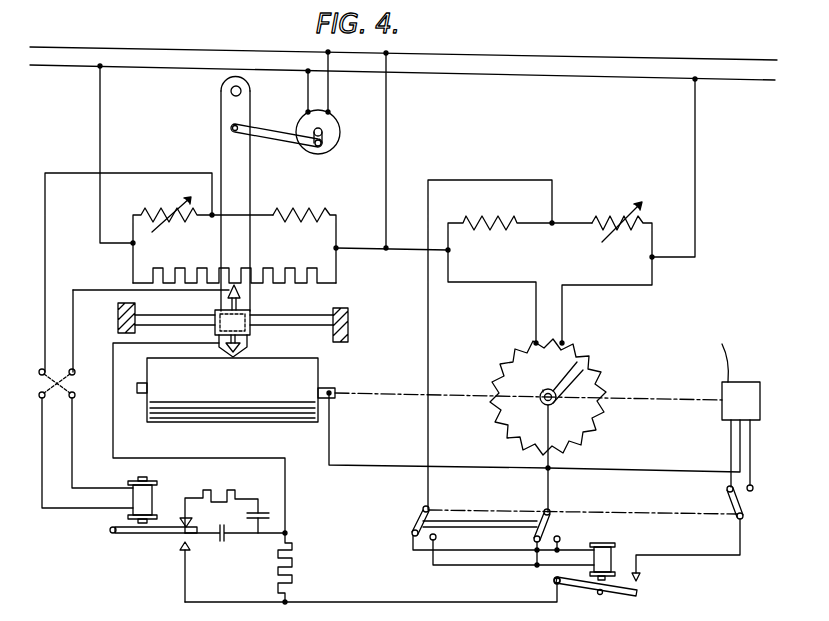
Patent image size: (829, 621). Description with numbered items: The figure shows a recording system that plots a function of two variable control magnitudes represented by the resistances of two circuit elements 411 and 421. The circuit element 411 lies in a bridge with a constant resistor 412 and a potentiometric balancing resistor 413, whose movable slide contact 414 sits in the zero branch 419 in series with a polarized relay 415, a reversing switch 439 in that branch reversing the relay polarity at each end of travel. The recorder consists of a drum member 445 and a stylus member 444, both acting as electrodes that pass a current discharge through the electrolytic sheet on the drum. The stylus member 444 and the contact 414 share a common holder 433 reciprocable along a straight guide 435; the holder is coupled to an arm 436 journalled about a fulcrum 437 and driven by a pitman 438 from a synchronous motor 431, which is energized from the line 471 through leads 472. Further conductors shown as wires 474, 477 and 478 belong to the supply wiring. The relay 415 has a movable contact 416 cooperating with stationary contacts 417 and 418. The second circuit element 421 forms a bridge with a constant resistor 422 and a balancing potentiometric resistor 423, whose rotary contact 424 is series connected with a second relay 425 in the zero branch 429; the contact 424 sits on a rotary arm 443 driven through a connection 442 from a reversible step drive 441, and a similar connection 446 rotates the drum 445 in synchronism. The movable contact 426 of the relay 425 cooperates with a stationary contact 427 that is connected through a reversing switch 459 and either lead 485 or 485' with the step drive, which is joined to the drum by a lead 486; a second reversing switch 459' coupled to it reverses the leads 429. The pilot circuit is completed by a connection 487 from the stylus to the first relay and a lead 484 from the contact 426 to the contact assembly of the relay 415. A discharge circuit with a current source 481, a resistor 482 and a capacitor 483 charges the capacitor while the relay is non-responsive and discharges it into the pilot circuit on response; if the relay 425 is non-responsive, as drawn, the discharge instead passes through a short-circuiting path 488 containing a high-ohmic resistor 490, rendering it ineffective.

The variable circuit element 411 is at (158, 211).
The constant resistor 412 is at (305, 210).
The potentiometric balancing resistor 413 is at (286, 268).
The movable slide contact 414 is at (240, 297).
The relay 415 is at (152, 497).
The movable contact 416 is at (120, 529).
The stationary contact 417 is at (176, 530).
The stationary contact 418 is at (183, 551).
The zero branch 419 is at (45, 272).
The variable circuit element 421 is at (607, 216).
The constant resistor 422 is at (484, 216).
The balancing potentiometric resistor 423 is at (600, 381).
The movable contact 424 is at (574, 367).
The second relay 425 is at (610, 556).
The movable contact 426 is at (606, 597).
The stationary contact 427 is at (642, 577).
The zero branch 429 is at (528, 463).
The synchronous motor 431 is at (335, 140).
The common holder 433 is at (215, 317).
The straight guide 435 is at (190, 320).
The arm 436 is at (226, 153).
The fulcrum 437 is at (222, 90).
The pitman 438 is at (273, 130).
The reversing switch 439 is at (70, 383).
The step drive 441 is at (744, 382).
The connection 442 is at (664, 401).
The rotary arm 443 is at (608, 390).
The stylus member 444 is at (248, 350).
The drum member 445 is at (272, 409).
The connection 446 is at (366, 392).
The reversing switch 459 is at (756, 502).
The second reversing switch 459' is at (574, 527).
The line 471 is at (766, 55).
The leads 472 is at (329, 91).
The conductor 474 is at (99, 104).
The conductor 477 is at (697, 123).
The conductor 478 is at (388, 106).
The current source 481 is at (270, 516).
The resistor 482 is at (231, 498).
The capacitor 483 is at (220, 542).
The lead 484 is at (407, 603).
The lead 485 is at (705, 453).
The lead 485' is at (770, 455).
The lead 486 is at (643, 472).
The connection 487 is at (193, 458).
The short-circuiting path 488 is at (287, 538).
The resistor 490 is at (294, 571).